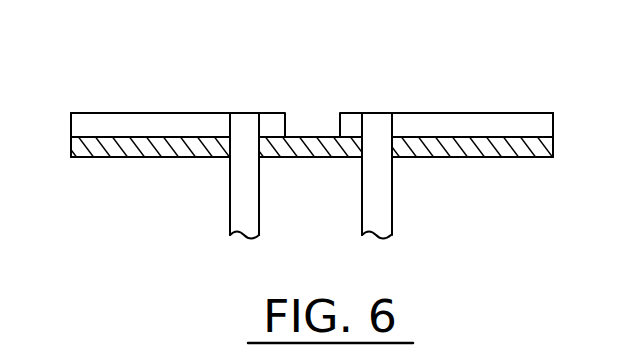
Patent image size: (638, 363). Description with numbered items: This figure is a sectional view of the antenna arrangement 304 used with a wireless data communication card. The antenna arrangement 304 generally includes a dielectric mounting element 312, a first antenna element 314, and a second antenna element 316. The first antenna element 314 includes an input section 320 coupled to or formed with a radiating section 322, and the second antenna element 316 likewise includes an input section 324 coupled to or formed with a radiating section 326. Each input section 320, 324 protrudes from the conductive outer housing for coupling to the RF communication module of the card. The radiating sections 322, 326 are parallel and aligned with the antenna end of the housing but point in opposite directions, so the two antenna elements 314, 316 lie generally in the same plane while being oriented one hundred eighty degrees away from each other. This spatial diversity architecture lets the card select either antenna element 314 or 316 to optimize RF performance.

The antenna arrangement 304 is at (313, 43).
The dielectric mounting element 312 is at (530, 157).
The first antenna element 314 is at (163, 86).
The second antenna element 316 is at (443, 88).
The input section 320 is at (230, 188).
The radiating section 322 is at (95, 113).
The input section 324 is at (392, 185).
The radiating section 326 is at (522, 113).